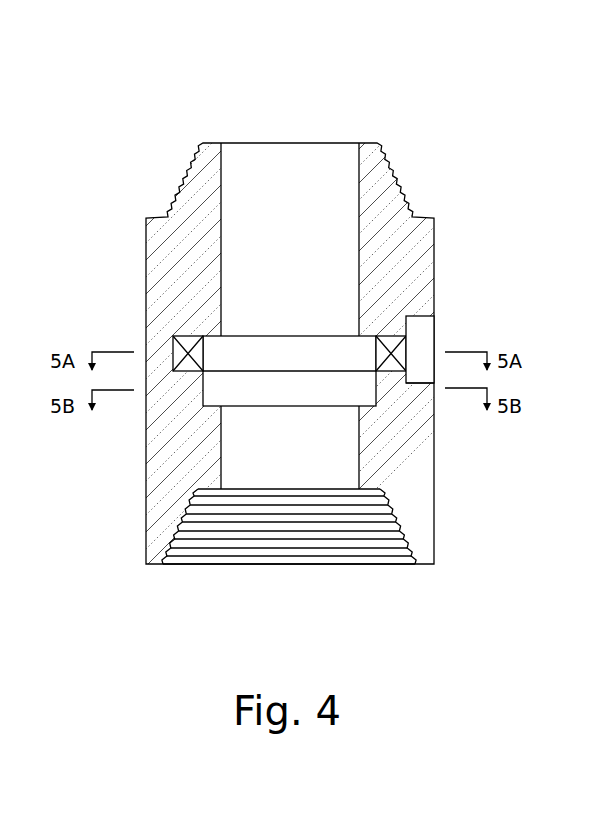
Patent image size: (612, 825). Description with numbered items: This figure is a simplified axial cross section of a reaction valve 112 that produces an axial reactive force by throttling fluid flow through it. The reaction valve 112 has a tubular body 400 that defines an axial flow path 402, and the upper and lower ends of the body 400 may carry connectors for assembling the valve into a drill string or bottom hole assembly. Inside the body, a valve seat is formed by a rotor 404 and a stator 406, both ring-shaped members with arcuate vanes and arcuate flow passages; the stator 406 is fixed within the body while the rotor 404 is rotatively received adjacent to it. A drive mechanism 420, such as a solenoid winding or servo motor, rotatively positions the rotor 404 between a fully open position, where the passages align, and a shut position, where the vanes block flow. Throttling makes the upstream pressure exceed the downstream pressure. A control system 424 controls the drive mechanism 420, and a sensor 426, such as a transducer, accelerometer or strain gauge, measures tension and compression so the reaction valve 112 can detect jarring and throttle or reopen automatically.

The reaction valve 112 is at (441, 127).
The tubular body 400 is at (435, 258).
The axial flow path 402 is at (318, 157).
The rotor 404 is at (320, 335).
The stator 406 is at (248, 408).
The drive mechanism 420 is at (178, 336).
The control system 424 is at (435, 332).
The sensor 426 is at (420, 388).